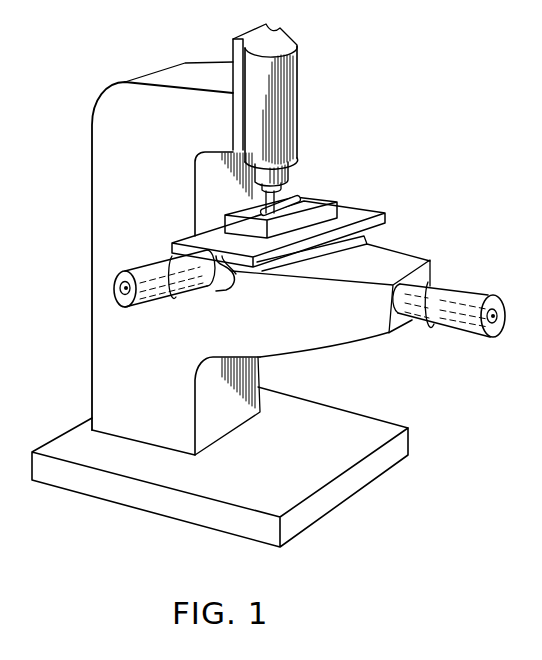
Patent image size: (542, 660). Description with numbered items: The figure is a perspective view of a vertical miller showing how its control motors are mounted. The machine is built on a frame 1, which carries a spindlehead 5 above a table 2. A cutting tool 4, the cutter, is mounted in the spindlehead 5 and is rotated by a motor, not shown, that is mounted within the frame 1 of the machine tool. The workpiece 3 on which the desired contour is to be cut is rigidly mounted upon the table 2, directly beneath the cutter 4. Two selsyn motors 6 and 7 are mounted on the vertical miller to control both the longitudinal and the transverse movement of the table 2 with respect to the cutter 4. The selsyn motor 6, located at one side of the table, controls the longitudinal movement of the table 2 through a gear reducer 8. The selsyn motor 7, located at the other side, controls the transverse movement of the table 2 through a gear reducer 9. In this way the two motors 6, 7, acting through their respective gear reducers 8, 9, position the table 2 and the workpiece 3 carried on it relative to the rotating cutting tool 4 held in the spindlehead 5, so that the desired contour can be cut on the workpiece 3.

The frame 1 is at (83, 180).
The table 2 is at (388, 215).
The workpiece 3 is at (320, 195).
The cutting tool 4 is at (275, 194).
The spindlehead 5 is at (302, 100).
The selsyn motor 6 is at (110, 288).
The selsyn motor 7 is at (473, 294).
The gear reducer 8 is at (187, 295).
The gear reducer 9 is at (433, 278).